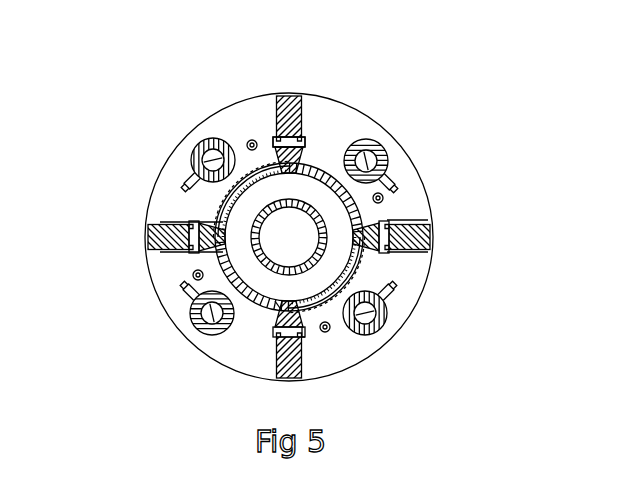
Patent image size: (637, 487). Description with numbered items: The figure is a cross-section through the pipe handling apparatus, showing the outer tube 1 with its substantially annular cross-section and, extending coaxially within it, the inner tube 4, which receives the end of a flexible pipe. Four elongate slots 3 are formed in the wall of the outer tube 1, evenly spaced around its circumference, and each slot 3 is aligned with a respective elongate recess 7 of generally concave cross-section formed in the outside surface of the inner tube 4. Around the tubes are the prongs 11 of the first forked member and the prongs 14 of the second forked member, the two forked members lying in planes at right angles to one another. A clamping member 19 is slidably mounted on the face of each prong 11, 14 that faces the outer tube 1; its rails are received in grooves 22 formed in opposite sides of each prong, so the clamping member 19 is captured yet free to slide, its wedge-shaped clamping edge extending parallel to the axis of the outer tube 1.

The outer tube 1 is at (319, 162).
The elongate slots 3 is at (273, 307).
The inner tube 4 is at (318, 258).
The elongate recesses 7 is at (287, 200).
The prongs 11 is at (290, 108).
The prongs 14 is at (149, 236).
The clamping member 19 is at (302, 323).
The grooves 22 is at (277, 137).